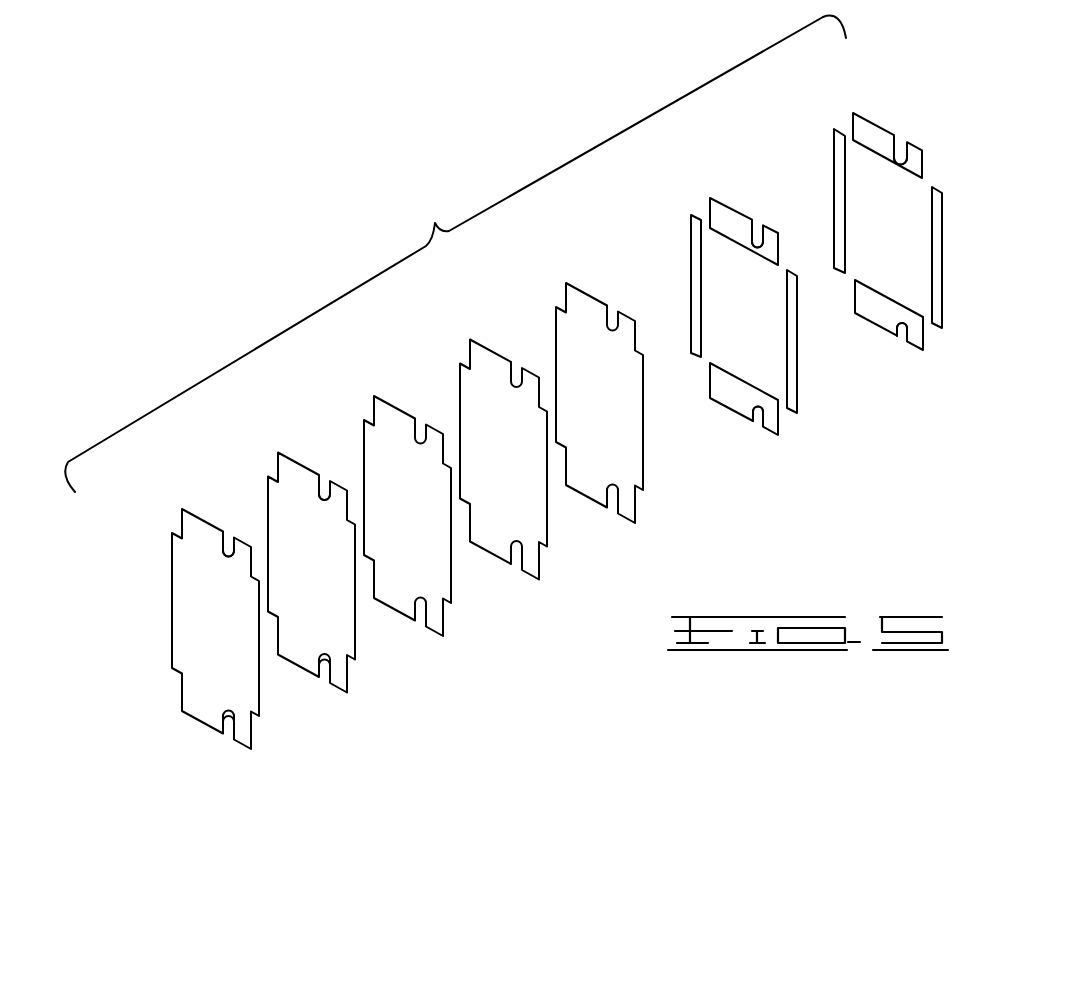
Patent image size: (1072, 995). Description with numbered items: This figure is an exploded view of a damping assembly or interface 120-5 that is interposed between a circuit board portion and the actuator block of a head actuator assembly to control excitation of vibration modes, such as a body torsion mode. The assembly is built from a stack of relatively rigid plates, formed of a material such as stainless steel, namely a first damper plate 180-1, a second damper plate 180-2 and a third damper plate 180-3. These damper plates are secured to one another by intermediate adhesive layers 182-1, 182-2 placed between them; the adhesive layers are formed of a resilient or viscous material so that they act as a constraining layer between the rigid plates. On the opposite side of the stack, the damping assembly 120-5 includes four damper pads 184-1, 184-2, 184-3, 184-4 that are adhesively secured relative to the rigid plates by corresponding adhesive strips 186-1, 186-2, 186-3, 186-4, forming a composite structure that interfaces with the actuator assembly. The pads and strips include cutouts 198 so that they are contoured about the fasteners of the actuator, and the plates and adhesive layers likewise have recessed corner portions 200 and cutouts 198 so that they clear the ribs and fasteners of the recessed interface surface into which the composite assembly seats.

The damping assembly 120-5 is at (410, 190).
The first damper plate 180-1 is at (593, 292).
The second damper plate 180-2 is at (401, 404).
The third damper plate 180-3 is at (209, 517).
The adhesive layer 182-1 is at (497, 348).
The adhesive layer 182-2 is at (305, 461).
The damper pad 184-1 is at (880, 122).
The damper pad 184-2 is at (943, 273).
The damper pad 184-3 is at (923, 335).
The damper pad 184-4 is at (838, 178).
The adhesive strip 186-1 is at (737, 207).
The adhesive strip 186-2 is at (798, 357).
The adhesive strip 186-3 is at (778, 420).
The adhesive strip 186-4 is at (695, 280).
The cutout 198 is at (900, 145).
The recessed corner portion 200 is at (245, 563).